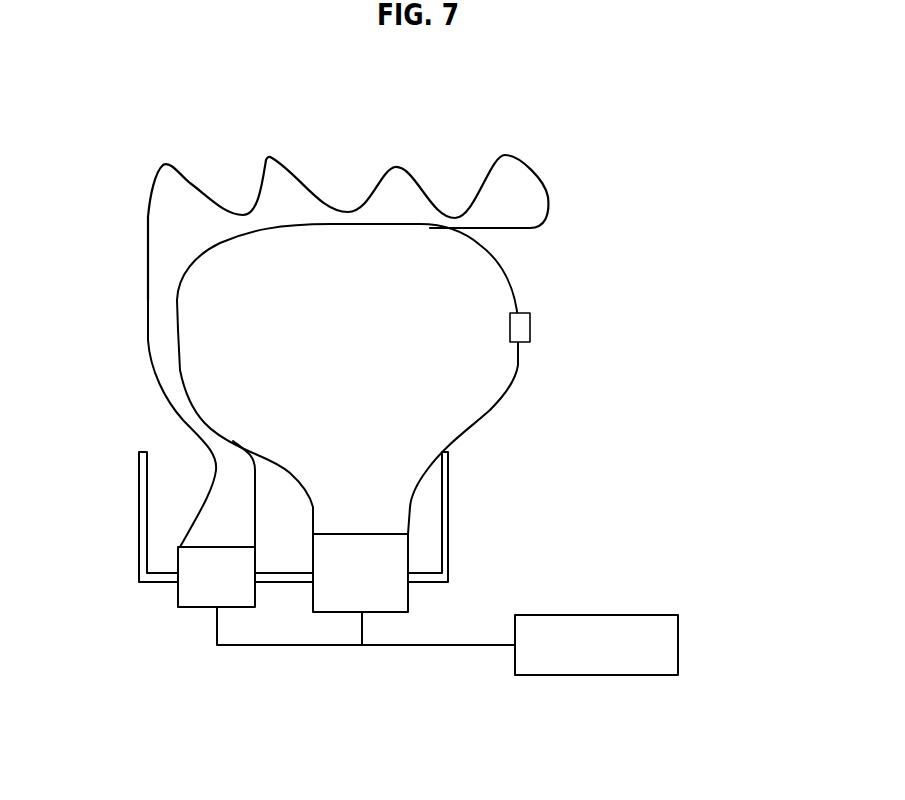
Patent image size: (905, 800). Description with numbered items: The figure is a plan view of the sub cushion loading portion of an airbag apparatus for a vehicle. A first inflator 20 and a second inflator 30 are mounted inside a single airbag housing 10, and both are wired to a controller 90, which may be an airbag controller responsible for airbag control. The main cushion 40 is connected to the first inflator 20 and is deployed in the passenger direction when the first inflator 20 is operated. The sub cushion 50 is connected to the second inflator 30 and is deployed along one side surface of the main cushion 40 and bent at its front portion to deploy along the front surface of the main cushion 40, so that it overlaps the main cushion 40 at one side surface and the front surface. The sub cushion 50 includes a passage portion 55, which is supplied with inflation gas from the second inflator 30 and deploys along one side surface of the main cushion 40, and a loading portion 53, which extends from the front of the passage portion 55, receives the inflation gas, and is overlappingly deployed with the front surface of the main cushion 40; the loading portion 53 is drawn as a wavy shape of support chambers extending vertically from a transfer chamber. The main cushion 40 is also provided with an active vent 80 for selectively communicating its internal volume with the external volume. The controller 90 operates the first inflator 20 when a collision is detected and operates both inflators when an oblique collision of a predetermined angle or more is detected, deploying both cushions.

The airbag housing 10 is at (448, 510).
The first inflator 20 is at (383, 613).
The second inflator 30 is at (193, 607).
The main cushion 40 is at (513, 272).
The sub cushion 50 is at (291, 307).
The loading portion 53 is at (268, 157).
The passage portion 55 is at (145, 372).
The active vent 80 is at (530, 326).
The controller 90 is at (678, 643).